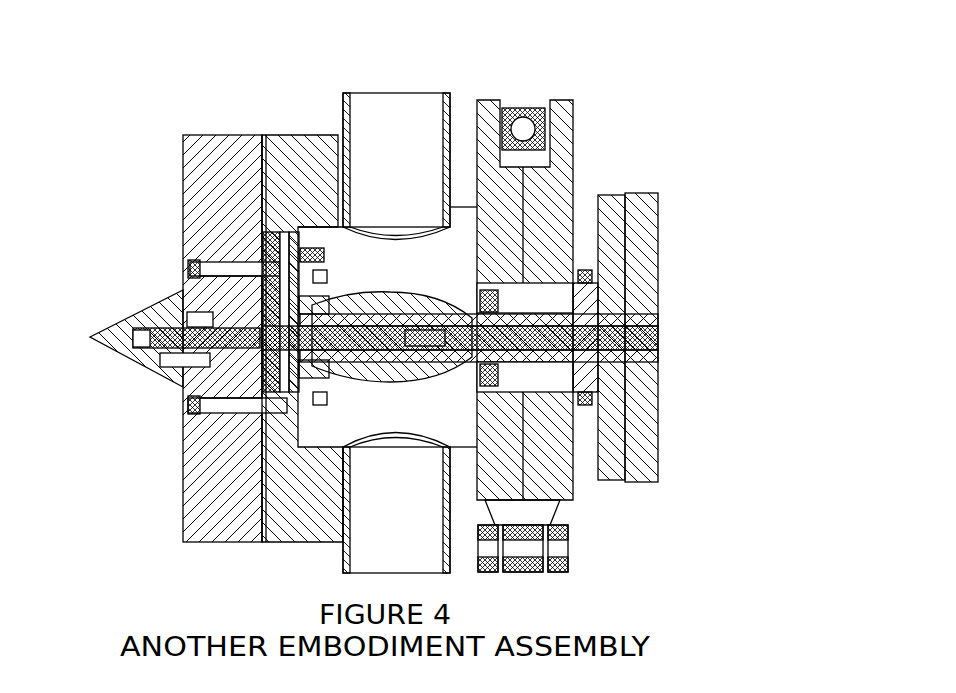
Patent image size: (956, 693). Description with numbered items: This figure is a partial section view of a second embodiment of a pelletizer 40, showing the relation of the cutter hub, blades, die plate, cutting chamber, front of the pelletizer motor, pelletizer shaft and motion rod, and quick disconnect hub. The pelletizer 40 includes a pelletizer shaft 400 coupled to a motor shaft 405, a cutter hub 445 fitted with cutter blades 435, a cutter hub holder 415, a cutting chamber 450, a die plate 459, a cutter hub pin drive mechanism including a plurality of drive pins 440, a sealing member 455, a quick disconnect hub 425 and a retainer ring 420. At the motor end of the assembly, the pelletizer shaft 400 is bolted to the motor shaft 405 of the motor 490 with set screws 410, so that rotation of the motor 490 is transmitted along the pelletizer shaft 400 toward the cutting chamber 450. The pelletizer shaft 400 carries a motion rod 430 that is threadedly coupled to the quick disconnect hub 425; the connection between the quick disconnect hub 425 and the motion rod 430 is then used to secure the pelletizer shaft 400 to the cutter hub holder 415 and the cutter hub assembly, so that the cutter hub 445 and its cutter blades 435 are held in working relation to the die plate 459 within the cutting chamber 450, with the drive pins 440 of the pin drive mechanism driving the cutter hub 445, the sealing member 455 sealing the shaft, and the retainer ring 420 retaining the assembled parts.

The pelletizer 40 is at (703, 217).
The pelletizer shaft 400 is at (457, 292).
The motor shaft 405 is at (618, 295).
The set screws 410 is at (587, 273).
The cutter hub holder 415 is at (365, 283).
The retainer ring 420 is at (340, 337).
The quick disconnect hub 425 is at (320, 303).
The motion rod 430 is at (482, 310).
The cutter blades 435 is at (318, 253).
The drive pins 440 is at (387, 293).
The cutter hub 445 is at (289, 250).
The cutting chamber 450 is at (280, 135).
The sealing member 455 is at (444, 290).
The die plate 459 is at (182, 172).
The motor 490 is at (663, 203).